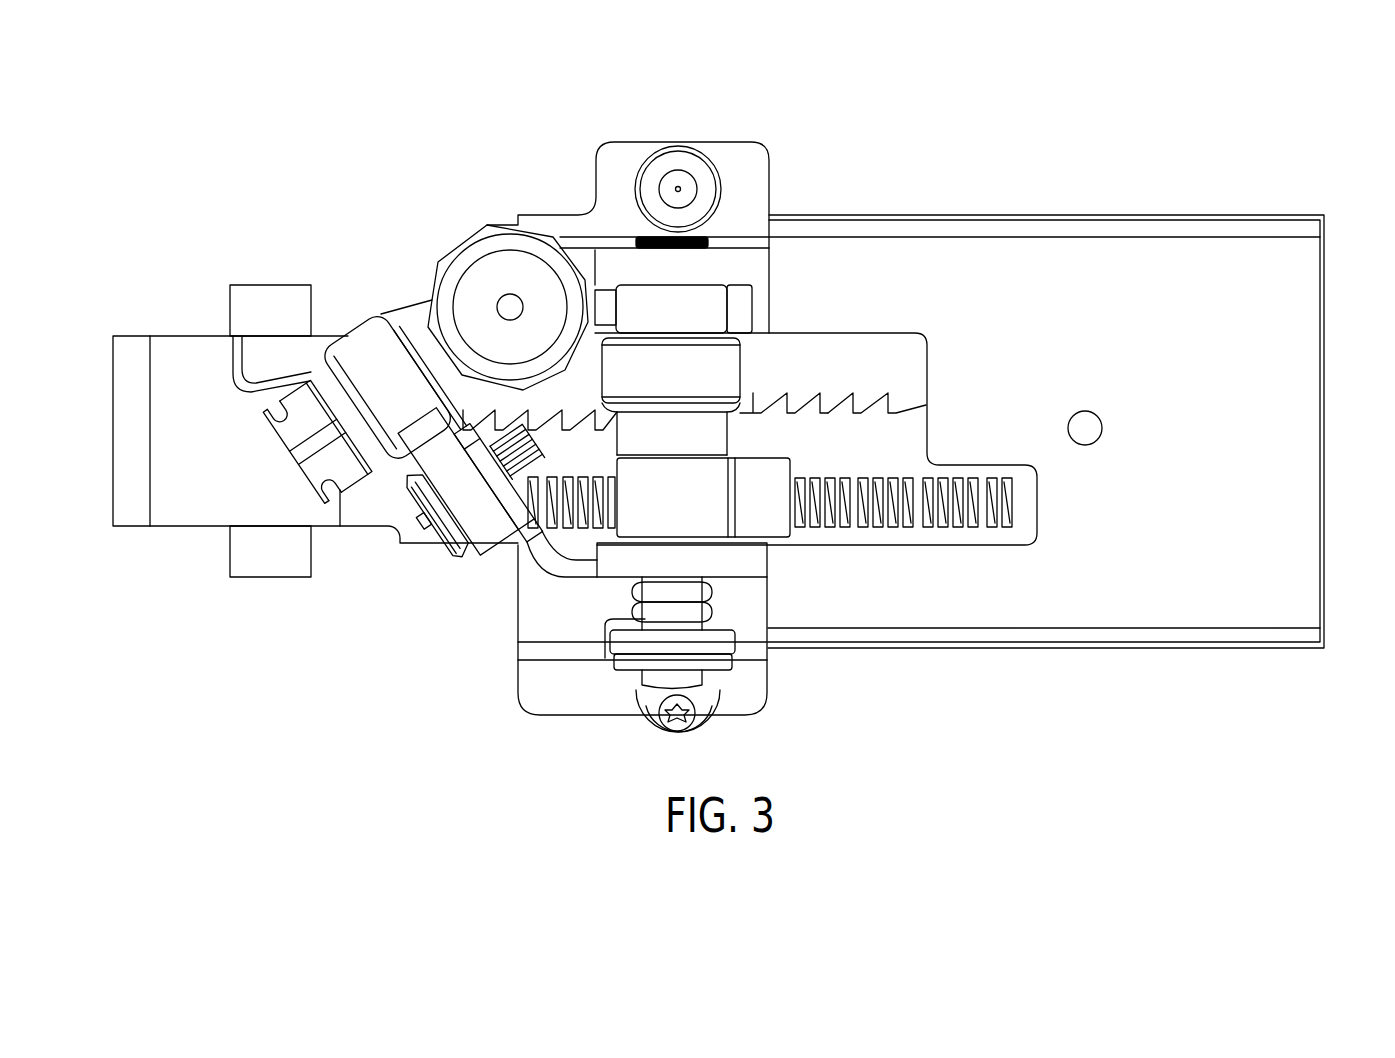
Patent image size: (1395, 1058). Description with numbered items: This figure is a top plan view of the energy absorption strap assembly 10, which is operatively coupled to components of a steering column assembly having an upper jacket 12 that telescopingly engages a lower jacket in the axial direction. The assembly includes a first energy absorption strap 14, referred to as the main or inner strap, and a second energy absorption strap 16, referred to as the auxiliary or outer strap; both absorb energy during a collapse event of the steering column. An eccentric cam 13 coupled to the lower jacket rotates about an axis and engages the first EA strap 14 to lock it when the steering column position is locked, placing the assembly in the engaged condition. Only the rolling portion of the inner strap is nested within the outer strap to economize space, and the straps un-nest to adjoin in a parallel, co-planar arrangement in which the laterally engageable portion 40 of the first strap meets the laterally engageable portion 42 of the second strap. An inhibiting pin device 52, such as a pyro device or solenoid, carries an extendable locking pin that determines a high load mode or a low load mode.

The energy absorption strap assembly 10 is at (536, 143).
The upper jacket 12 is at (1178, 644).
The eccentric cam 13 is at (712, 497).
The first energy absorption strap 14 is at (917, 432).
The second energy absorption strap 16 is at (836, 347).
The laterally engageable portion of the first EA strap 40 is at (903, 400).
The laterally engageable portion of the second EA strap 42 is at (808, 412).
The inhibiting pin device 52 is at (473, 257).